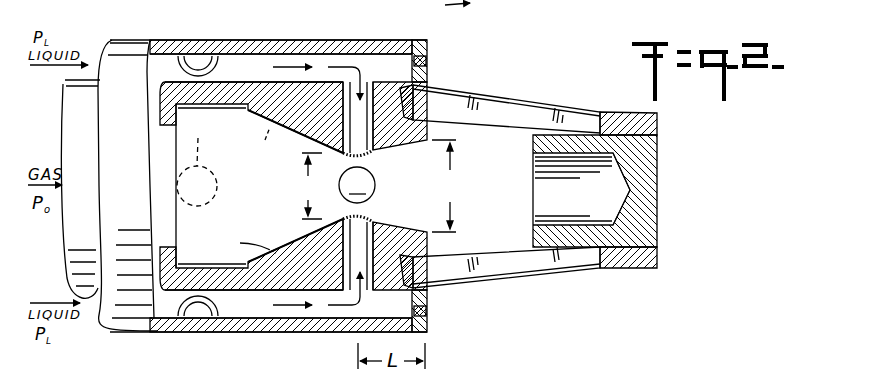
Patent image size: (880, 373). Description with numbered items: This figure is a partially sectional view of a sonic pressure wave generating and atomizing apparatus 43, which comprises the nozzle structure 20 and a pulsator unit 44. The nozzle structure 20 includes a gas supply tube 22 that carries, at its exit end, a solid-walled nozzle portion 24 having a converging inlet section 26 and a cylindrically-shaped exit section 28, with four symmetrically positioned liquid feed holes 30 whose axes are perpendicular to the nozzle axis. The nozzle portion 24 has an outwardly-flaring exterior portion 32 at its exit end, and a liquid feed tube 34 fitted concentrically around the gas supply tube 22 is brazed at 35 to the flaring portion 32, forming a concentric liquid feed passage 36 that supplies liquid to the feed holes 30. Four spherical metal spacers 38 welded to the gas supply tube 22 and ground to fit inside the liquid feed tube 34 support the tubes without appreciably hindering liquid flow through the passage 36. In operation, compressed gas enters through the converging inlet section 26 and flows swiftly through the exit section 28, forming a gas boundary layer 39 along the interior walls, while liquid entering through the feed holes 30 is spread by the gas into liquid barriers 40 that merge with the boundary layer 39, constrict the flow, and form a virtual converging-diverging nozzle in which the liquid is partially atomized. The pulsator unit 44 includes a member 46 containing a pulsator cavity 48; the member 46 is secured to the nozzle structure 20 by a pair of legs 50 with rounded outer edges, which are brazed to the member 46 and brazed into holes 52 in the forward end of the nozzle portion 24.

The nozzle structure 20 is at (432, 49).
The gas supply tube 22 is at (72, 90).
The nozzle portion 24 is at (333, 302).
The converging inlet section 26 is at (286, 200).
The cylindrically-shaped exit section 28 is at (418, 199).
The liquid feed holes 30 is at (342, 113).
The outwardly-flaring exterior portion 32 is at (412, 50).
The liquid feed tube 34 is at (129, 46).
The braze 35 is at (428, 61).
The liquid feed passage 36 is at (259, 62).
The spherical metal spacers 38 is at (192, 62).
The gas boundary layer 39 is at (247, 190).
The liquid barriers 40 is at (365, 162).
The sonic pressure wave generating and atomizing apparatus 43 is at (535, 338).
The pulsator unit 44 is at (660, 136).
The member 46 is at (640, 172).
The pulsator cavity 48 is at (540, 163).
The legs 50 is at (520, 98).
The holes 52 is at (420, 124).